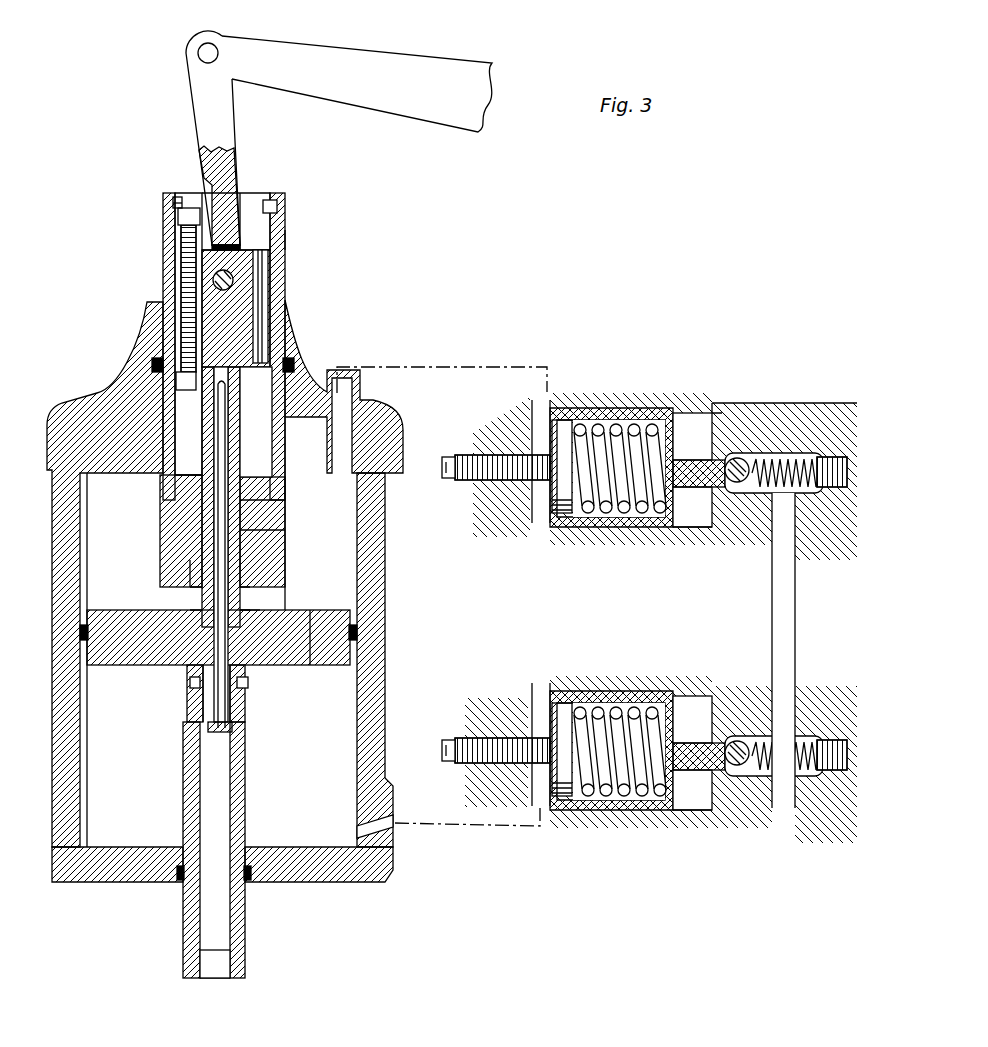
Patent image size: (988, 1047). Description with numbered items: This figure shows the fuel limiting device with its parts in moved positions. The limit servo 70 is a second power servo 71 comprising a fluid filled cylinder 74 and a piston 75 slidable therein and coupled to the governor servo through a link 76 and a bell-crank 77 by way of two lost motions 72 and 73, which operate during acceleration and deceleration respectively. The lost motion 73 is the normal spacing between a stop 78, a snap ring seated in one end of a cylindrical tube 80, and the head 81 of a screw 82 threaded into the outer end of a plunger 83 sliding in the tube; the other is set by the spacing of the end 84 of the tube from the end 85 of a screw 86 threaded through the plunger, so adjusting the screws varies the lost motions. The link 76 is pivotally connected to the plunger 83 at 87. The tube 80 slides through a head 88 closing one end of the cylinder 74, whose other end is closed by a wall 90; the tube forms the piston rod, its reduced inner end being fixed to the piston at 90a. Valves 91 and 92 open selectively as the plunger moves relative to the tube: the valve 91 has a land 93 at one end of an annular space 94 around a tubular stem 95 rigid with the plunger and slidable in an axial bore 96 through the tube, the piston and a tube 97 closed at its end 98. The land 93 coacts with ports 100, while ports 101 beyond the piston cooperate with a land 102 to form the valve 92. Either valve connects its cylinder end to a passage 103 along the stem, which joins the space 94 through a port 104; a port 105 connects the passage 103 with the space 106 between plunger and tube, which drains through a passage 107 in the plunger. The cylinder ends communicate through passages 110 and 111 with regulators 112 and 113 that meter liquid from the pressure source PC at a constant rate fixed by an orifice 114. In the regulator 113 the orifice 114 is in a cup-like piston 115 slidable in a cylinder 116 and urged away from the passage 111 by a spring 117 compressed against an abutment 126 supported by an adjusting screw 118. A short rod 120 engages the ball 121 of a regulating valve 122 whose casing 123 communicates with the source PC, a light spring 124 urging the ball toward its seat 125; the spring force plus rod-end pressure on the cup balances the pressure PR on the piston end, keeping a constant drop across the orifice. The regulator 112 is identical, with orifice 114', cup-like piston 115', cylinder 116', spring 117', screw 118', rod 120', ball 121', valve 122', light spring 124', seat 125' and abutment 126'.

The limit servo 70 is at (298, 190).
The second power servo 71 is at (390, 622).
The lost motion 72 is at (190, 397).
The lost motion 73 is at (190, 206).
The fluid filled cylinder 74 is at (358, 575).
The piston 75 is at (310, 622).
The link 76 is at (234, 136).
The bell-crank 77 is at (414, 62).
The abutment or stop 78 is at (279, 218).
The cylindrical tube 80 is at (286, 238).
The head of screw 81 is at (176, 215).
The screw 82 is at (183, 238).
The plunger 83 is at (276, 298).
The end of tube 84 is at (177, 471).
The end of screw 85 is at (176, 393).
The screw 86 is at (188, 331).
The pivot connection 87 is at (232, 291).
The head 88 is at (310, 379).
The wall 90 is at (318, 876).
The piston shoulder 90a is at (253, 610).
The valve 91 is at (200, 586).
The valve 92 is at (250, 655).
The land 93 is at (202, 560).
The annular space 94 is at (232, 563).
The tubular stem 95 is at (232, 542).
The axial bore 96 is at (232, 518).
The tube 97 is at (247, 773).
The closed end 98 is at (212, 973).
The ports 100 is at (193, 595).
The ports 101 is at (190, 690).
The land 102 is at (200, 628).
The passage 103 is at (208, 729).
The port 104 is at (235, 580).
The port 105 is at (238, 397).
The space 106 is at (255, 432).
The passage 107 is at (263, 283).
The passage 110 is at (392, 832).
The passage 111 is at (352, 373).
The regulator 112 is at (642, 831).
The regulator 113 is at (637, 404).
The orifice 114 is at (695, 436).
The cup-like piston 115 is at (623, 454).
The cylinder 116 is at (784, 481).
The spring 117 is at (619, 490).
The screw 118 is at (496, 484).
The short rod 120 is at (699, 465).
The ball 121 is at (746, 490).
The regulating valve 122 is at (774, 456).
The casing 123 is at (805, 456).
The light spring 124 is at (838, 492).
The seat 125 is at (695, 507).
The abutment 126 is at (565, 480).
The orifice 114' is at (697, 719).
The cup-like piston 115' is at (611, 771).
The cylinder 116' is at (681, 749).
The spring 117' is at (619, 733).
The screw 118' is at (496, 735).
The short rod 120' is at (716, 736).
The ball 121' is at (752, 740).
The regulating valve 122' is at (769, 788).
The light spring 124' is at (803, 740).
The seat 125' is at (721, 792).
The abutment 126' is at (562, 730).
The pressure Pr PR is at (703, 528).
The pressure source Pc PC is at (780, 811).